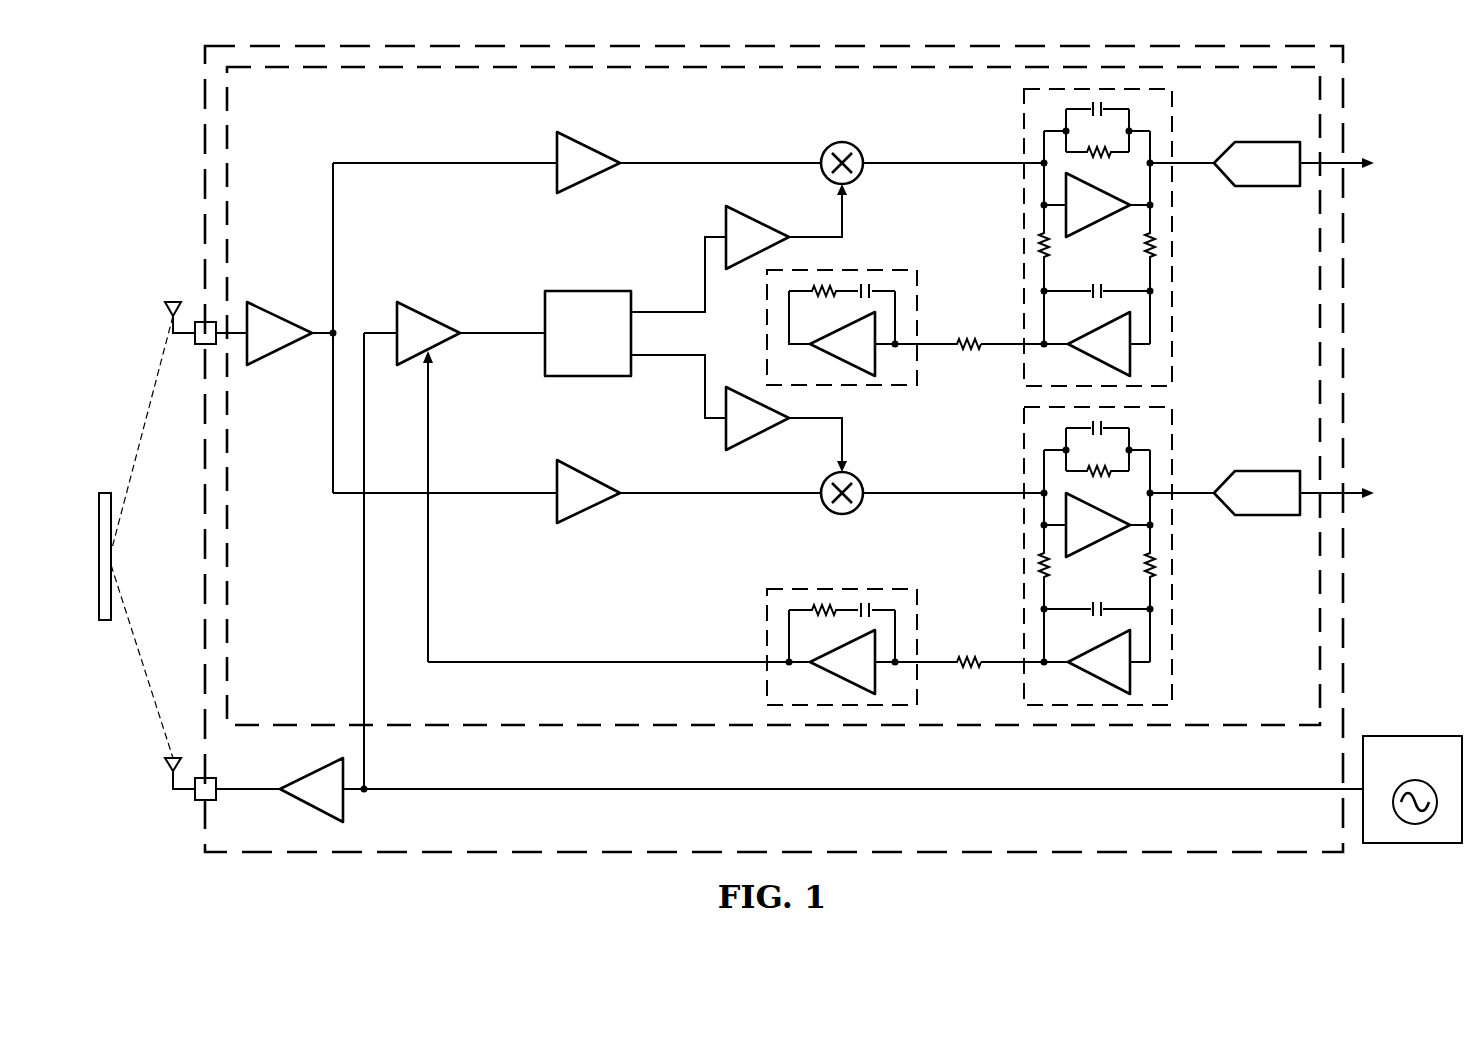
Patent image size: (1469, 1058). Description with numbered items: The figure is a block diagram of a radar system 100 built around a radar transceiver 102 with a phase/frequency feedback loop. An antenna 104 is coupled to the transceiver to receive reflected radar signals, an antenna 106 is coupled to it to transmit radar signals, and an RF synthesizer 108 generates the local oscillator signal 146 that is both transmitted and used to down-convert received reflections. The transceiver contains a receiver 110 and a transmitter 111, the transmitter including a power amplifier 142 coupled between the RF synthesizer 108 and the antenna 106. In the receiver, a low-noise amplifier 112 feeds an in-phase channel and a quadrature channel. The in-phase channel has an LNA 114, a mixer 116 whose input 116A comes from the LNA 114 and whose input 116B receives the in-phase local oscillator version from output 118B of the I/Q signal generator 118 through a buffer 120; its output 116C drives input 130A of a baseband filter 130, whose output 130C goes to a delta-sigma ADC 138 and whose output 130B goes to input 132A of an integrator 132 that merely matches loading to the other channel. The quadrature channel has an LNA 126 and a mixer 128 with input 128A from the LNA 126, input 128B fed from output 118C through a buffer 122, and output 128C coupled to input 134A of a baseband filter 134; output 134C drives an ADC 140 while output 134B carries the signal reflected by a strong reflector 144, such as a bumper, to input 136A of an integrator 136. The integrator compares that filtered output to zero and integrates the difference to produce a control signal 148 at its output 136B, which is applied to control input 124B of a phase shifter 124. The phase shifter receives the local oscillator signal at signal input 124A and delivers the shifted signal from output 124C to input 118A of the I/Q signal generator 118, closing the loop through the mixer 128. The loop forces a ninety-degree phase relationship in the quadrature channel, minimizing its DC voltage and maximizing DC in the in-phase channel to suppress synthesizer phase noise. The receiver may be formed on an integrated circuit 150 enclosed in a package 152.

The radar system 100 is at (778, 472).
The radar transceiver 102 is at (778, 472).
The antenna 104 is at (173, 299).
The antenna 106 is at (165, 777).
The RF synthesizer 108 is at (1412, 845).
The receiver 110 is at (262, 410).
The transmitter 111 is at (283, 806).
The low-noise amplifier 112 is at (280, 312).
The LNA 114 is at (592, 150).
The mixer 116 is at (836, 142).
The input 116A is at (820, 175).
The input 116B is at (848, 212).
The output 116C is at (865, 158).
The I/Q signal generator 118 is at (580, 291).
The input 118A is at (540, 325).
The output 118B is at (638, 311).
The output 118C is at (638, 356).
The buffer 120 is at (722, 218).
The buffer 122 is at (722, 437).
The phase shifter 124 is at (425, 301).
The signal input 124A is at (392, 330).
The control input 124B is at (437, 362).
The output 124C is at (468, 330).
The LNA 126 is at (590, 512).
The mixer 128 is at (836, 514).
The input 128A is at (815, 490).
The input 128B is at (848, 450).
The output 128C is at (866, 497).
The baseband filter 130 is at (1182, 225).
The input 130A is at (1000, 160).
The output 130B is at (1000, 341).
The output 130C is at (1188, 160).
The integrator 132 is at (927, 277).
The input 132A is at (923, 348).
The baseband filter 134 is at (1182, 573).
The input 134A is at (1000, 490).
The output 134B is at (1000, 660).
The output 134C is at (1188, 498).
The integrator 136 is at (927, 597).
The input 136A is at (934, 668).
The output 136B is at (752, 668).
The ADC 138 is at (1266, 140).
The ADC 140 is at (1262, 517).
The power amplifier 142 is at (347, 802).
The strong reflector 144 is at (108, 622).
The local oscillator signal 146 is at (362, 650).
The control signal 148 is at (432, 602).
The integrated circuit 150 is at (1016, 736).
The package 152 is at (200, 105).